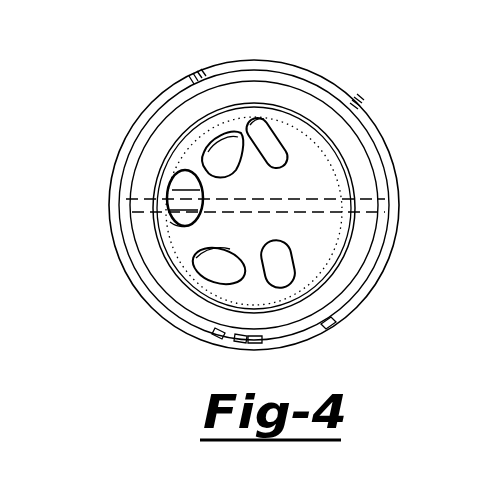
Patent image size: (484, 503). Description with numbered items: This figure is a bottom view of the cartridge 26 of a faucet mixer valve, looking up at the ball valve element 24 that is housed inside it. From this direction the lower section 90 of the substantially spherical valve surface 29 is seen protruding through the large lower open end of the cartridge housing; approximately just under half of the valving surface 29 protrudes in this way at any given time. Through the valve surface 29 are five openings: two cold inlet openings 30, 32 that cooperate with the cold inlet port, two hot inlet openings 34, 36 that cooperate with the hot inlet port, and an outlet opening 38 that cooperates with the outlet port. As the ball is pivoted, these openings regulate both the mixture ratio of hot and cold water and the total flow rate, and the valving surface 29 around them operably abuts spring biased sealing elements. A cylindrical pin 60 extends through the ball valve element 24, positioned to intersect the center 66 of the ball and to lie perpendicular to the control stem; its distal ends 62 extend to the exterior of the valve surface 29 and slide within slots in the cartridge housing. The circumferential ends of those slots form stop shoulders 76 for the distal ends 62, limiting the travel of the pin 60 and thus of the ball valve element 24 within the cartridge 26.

The ball valve element 24 is at (345, 137).
The cartridge 26 is at (299, 58).
The spherical valve surface 29 is at (290, 166).
The cold inlet opening 30 is at (225, 167).
The cold inlet opening 32 is at (278, 166).
The hot inlet opening 34 is at (228, 266).
The hot inlet opening 36 is at (283, 268).
The outlet opening 38 is at (172, 213).
The cylindrical pin 60 is at (172, 222).
The distal ends 62 is at (118, 146).
The center 66 is at (250, 207).
The stop shoulders 76 is at (186, 129).
The lower section 90 is at (345, 193).